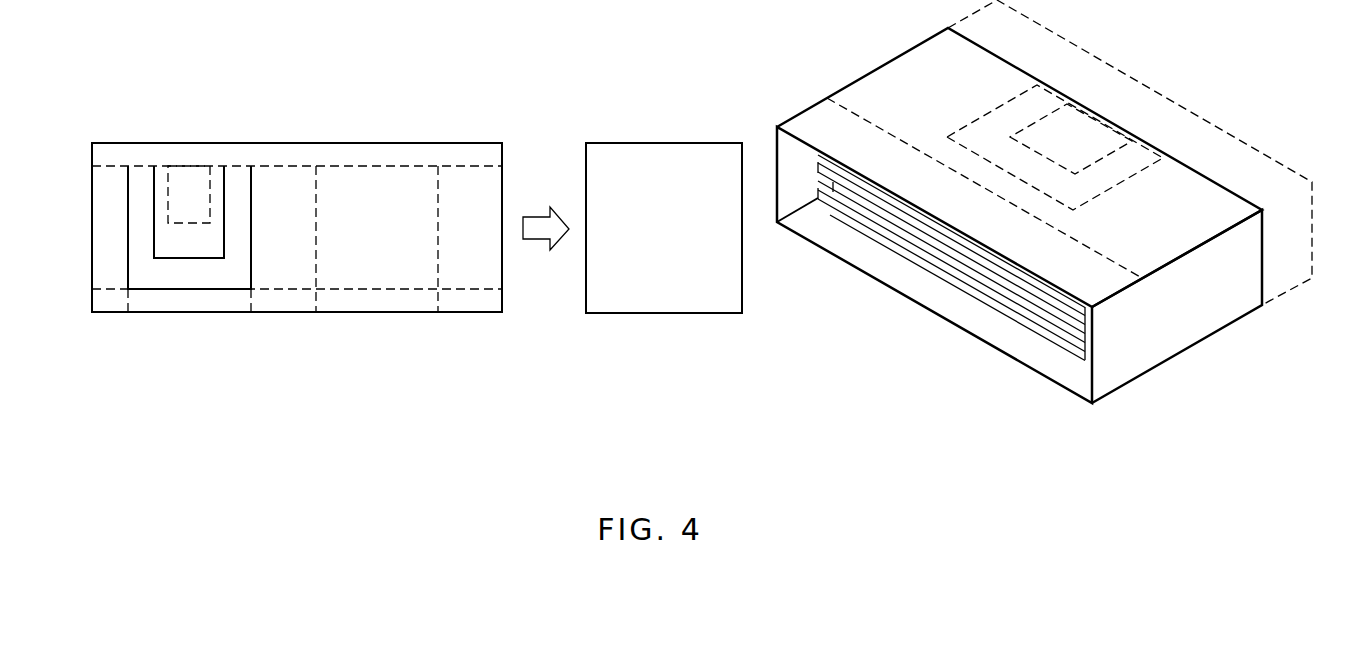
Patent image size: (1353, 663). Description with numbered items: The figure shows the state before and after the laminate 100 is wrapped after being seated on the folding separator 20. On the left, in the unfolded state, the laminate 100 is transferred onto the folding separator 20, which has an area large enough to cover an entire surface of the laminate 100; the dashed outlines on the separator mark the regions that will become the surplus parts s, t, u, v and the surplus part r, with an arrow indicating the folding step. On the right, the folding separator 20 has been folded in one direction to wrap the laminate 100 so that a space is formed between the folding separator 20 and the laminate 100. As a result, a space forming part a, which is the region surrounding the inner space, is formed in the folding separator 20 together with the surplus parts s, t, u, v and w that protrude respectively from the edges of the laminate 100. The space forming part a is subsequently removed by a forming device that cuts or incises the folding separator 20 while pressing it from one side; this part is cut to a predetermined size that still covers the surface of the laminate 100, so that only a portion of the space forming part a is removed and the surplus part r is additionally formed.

The folding separator 20 is at (268, 152).
The laminate 100 is at (141, 277).
The surplus part r is at (160, 192).
The surplus part s is at (194, 305).
The surplus part t is at (283, 305).
The surplus part u is at (383, 305).
The surplus part v is at (471, 305).
The space forming part a is at (1095, 128).
The surplus part w is at (1223, 153).